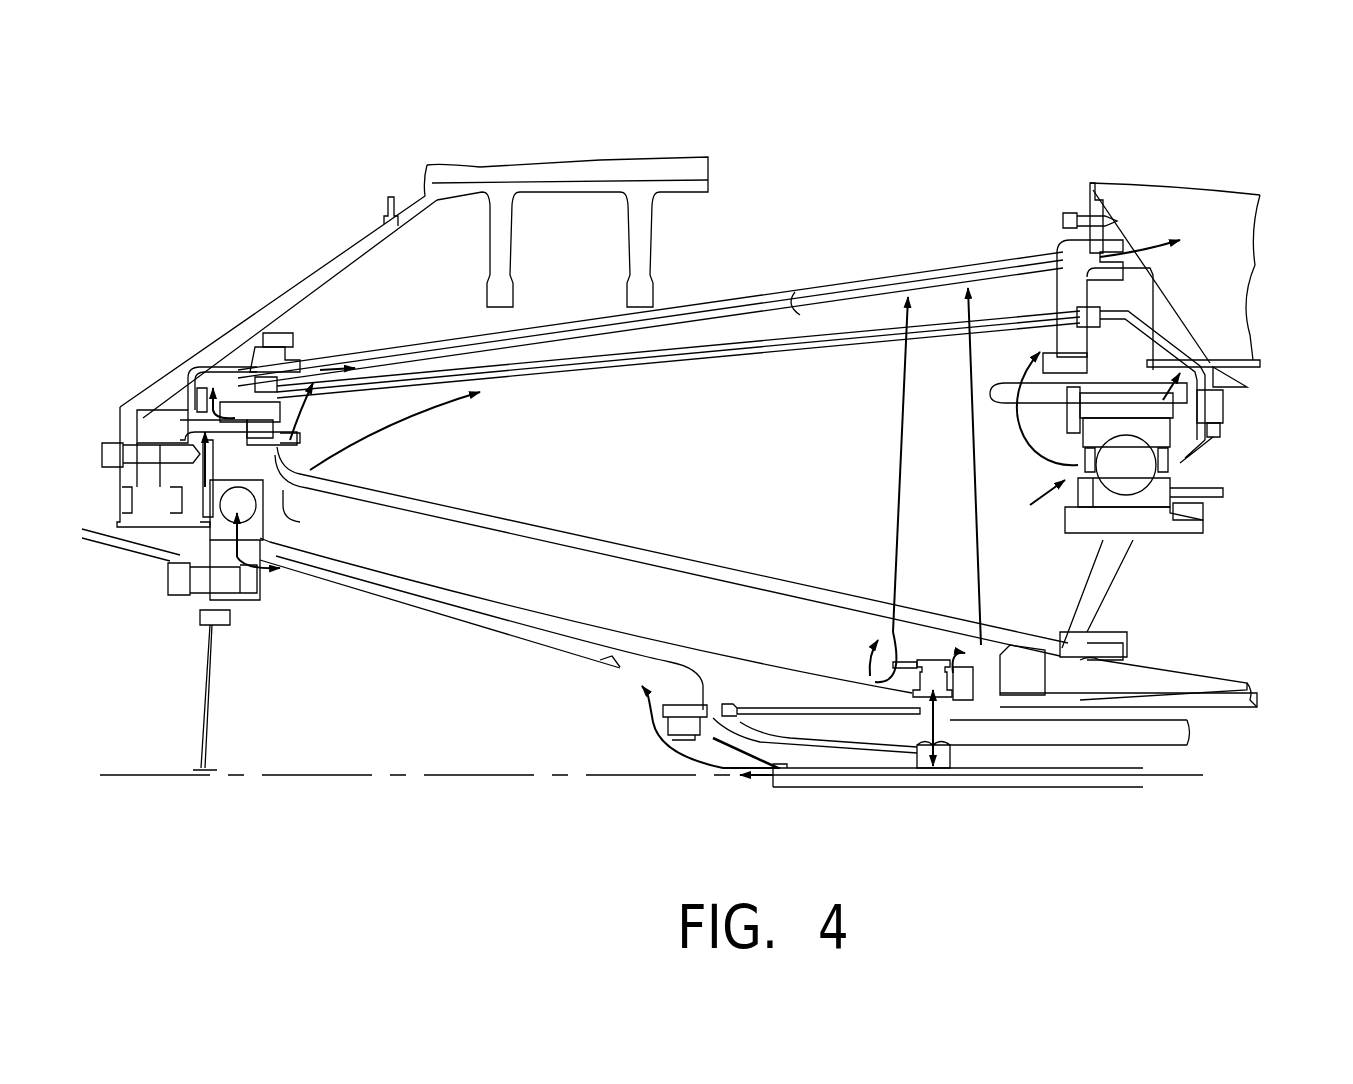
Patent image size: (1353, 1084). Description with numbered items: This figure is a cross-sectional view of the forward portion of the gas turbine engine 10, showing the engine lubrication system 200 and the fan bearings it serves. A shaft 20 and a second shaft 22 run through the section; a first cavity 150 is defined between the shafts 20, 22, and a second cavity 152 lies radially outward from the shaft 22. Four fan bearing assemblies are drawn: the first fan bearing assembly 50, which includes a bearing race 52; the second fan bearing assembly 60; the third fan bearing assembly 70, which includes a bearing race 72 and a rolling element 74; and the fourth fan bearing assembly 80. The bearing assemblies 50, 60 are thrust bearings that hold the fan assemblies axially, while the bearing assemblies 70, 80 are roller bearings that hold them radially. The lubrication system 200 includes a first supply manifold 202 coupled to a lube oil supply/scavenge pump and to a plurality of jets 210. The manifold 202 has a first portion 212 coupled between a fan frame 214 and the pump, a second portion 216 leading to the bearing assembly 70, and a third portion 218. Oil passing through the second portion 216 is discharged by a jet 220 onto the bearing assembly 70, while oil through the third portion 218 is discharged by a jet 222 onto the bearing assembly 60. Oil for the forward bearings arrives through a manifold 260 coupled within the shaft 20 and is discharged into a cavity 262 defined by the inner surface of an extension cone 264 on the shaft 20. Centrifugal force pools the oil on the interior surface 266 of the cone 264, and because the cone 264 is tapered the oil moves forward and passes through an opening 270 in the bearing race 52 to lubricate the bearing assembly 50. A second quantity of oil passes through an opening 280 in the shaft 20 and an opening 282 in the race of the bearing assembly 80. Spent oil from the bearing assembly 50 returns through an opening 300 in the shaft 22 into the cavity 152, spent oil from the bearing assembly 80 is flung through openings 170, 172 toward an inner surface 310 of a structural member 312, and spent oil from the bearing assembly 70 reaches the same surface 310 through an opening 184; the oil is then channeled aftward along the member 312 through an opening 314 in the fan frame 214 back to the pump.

The gas turbine engine 10 is at (802, 110).
The shaft 20 is at (445, 587).
The second shaft 22 is at (580, 537).
The first fan bearing assembly 50 is at (277, 510).
The bearing race 52 is at (262, 522).
The second fan bearing assembly 60 is at (1106, 500).
The third fan bearing assembly 70 is at (325, 425).
The bearing race 72 is at (270, 440).
The rolling element 74 is at (287, 447).
The fourth fan bearing assembly 80 is at (875, 673).
The first cavity 150 is at (598, 602).
The second cavity 152 is at (663, 452).
The opening 170 is at (890, 603).
The opening 172 is at (975, 640).
The opening 184 is at (188, 412).
The engine lubrication system 200 is at (535, 658).
The first supply manifold 202 is at (1255, 360).
The jets 210 is at (1237, 433).
The first portion 212 is at (1165, 330).
The fan frame 214 is at (1137, 272).
The second portion 216 is at (735, 348).
The third portion 218 is at (1225, 385).
The jet 220 is at (327, 398).
The jet 222 is at (1132, 480).
The manifold 260 is at (257, 367).
The cavity 262 is at (437, 677).
The extension cone 264 is at (617, 657).
The interior surface 266 is at (425, 597).
The opening 270 is at (242, 555).
The opening 280 is at (952, 755).
The opening 282 is at (930, 720).
The opening 300 is at (283, 458).
The inner surface 310 is at (800, 292).
The structural member 312 is at (700, 300).
The opening 314 is at (1137, 250).